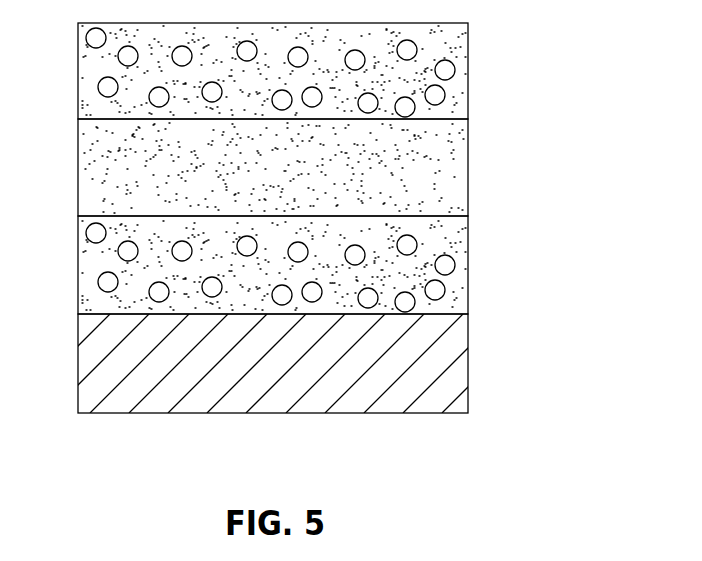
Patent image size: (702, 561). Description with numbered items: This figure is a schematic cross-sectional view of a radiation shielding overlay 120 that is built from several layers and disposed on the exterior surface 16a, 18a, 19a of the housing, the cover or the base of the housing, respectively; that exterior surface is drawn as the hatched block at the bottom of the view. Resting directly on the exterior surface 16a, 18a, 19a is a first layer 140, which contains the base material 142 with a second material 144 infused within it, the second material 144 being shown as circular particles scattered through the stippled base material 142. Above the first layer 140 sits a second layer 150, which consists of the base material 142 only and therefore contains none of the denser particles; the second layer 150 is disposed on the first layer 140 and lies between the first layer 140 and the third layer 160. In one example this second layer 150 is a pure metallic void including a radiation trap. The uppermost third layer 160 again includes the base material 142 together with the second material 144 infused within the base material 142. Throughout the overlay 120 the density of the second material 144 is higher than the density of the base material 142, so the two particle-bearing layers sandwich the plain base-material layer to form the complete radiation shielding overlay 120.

The radiation shielding overlay 120 is at (602, 109).
The third layer 160 is at (470, 77).
The second layer 150 is at (456, 173).
The first layer 140 is at (470, 273).
The second material 144 is at (89, 39).
The base material 142 is at (86, 106).
The exterior surface of the housing 16a is at (270, 398).
The exterior surface of the cover 18a is at (270, 398).
The exterior surface of the base 19a is at (277, 413).